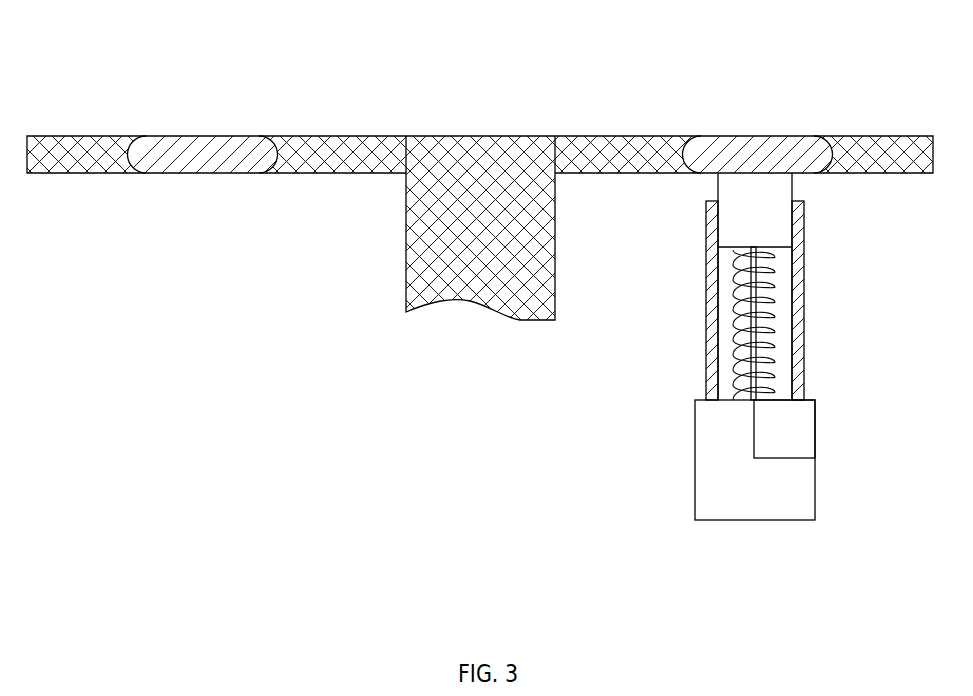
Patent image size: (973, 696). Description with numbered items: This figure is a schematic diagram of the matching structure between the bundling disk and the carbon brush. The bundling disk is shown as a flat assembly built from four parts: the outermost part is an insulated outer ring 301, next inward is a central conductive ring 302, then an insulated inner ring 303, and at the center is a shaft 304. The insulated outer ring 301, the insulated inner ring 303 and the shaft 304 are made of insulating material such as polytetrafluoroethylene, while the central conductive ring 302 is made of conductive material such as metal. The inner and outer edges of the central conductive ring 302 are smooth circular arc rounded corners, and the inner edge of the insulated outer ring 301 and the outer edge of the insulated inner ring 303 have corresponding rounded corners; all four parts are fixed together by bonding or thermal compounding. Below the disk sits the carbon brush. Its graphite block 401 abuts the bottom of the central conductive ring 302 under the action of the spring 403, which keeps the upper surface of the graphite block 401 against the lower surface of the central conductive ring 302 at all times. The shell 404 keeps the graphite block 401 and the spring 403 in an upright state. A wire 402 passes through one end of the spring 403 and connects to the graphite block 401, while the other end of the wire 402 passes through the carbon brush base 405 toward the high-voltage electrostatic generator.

The insulated outer ring 301 is at (52, 157).
The central conductive ring 302 is at (195, 153).
The insulated inner ring 303 is at (345, 149).
The shaft 304 is at (485, 160).
The graphite block 401 is at (762, 195).
The wire 402 is at (754, 260).
The spring 403 is at (763, 325).
The shell 404 is at (797, 386).
The carbon brush base 405 is at (787, 436).